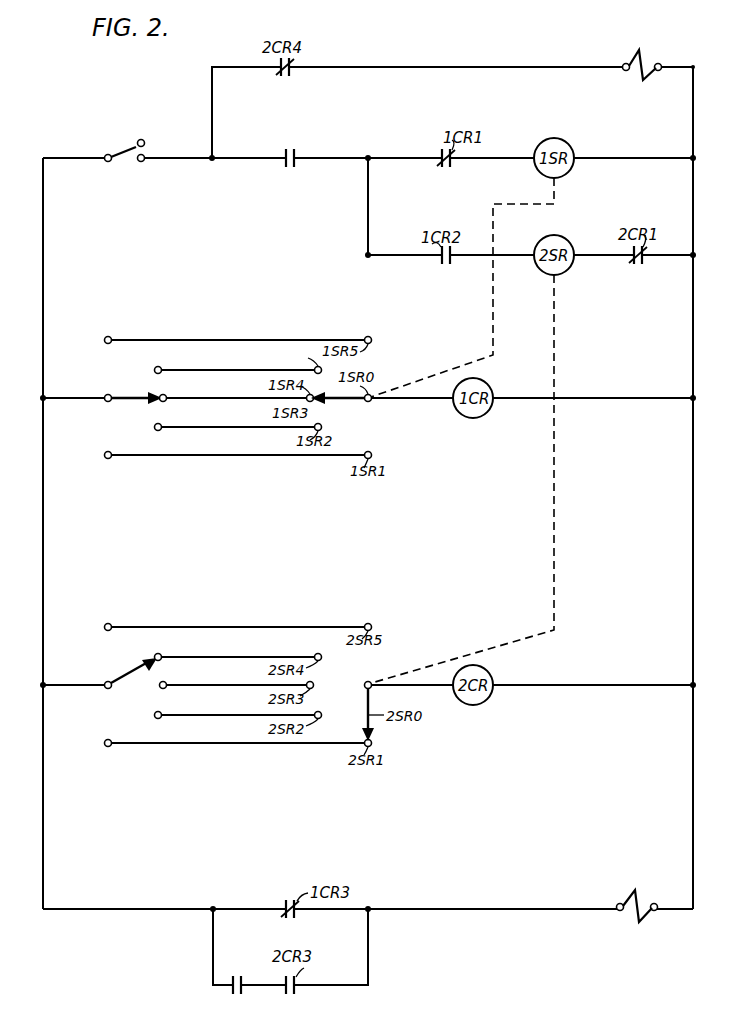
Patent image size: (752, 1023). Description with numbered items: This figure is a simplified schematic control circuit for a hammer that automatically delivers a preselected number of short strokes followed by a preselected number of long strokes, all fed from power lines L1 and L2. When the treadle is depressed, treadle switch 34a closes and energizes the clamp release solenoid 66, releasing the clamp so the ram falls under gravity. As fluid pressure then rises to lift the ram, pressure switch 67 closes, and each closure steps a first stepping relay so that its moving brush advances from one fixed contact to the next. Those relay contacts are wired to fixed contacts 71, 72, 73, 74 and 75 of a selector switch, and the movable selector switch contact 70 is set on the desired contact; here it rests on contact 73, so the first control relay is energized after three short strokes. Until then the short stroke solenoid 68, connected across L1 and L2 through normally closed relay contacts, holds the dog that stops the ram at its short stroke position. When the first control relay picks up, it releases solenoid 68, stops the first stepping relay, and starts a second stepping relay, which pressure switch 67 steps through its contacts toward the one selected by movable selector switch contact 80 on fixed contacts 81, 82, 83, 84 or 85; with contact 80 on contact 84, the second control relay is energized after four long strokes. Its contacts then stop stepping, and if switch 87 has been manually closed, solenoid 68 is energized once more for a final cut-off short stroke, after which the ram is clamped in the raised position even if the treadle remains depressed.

The power line L1 is at (43, 215).
The power line L2 is at (693, 225).
The treadle switch 34a is at (120, 146).
The clamp release solenoid 66 is at (641, 55).
The pressure switch 67 is at (296, 148).
The short stroke selector solenoid 68 is at (637, 894).
The movable selector switch contact 70 is at (128, 400).
The fixed contact 71 is at (108, 459).
The fixed contact 72 is at (158, 423).
The fixed contact 73 is at (163, 394).
The fixed contact 74 is at (162, 356).
The fixed contact 75 is at (108, 336).
The movable selector switch contact 80 is at (135, 675).
The fixed contact 81 is at (108, 739).
The fixed contact 82 is at (158, 711).
The fixed contact 83 is at (163, 681).
The fixed contact 84 is at (158, 653).
The fixed contact 85 is at (108, 623).
The switch 87 is at (243, 993).